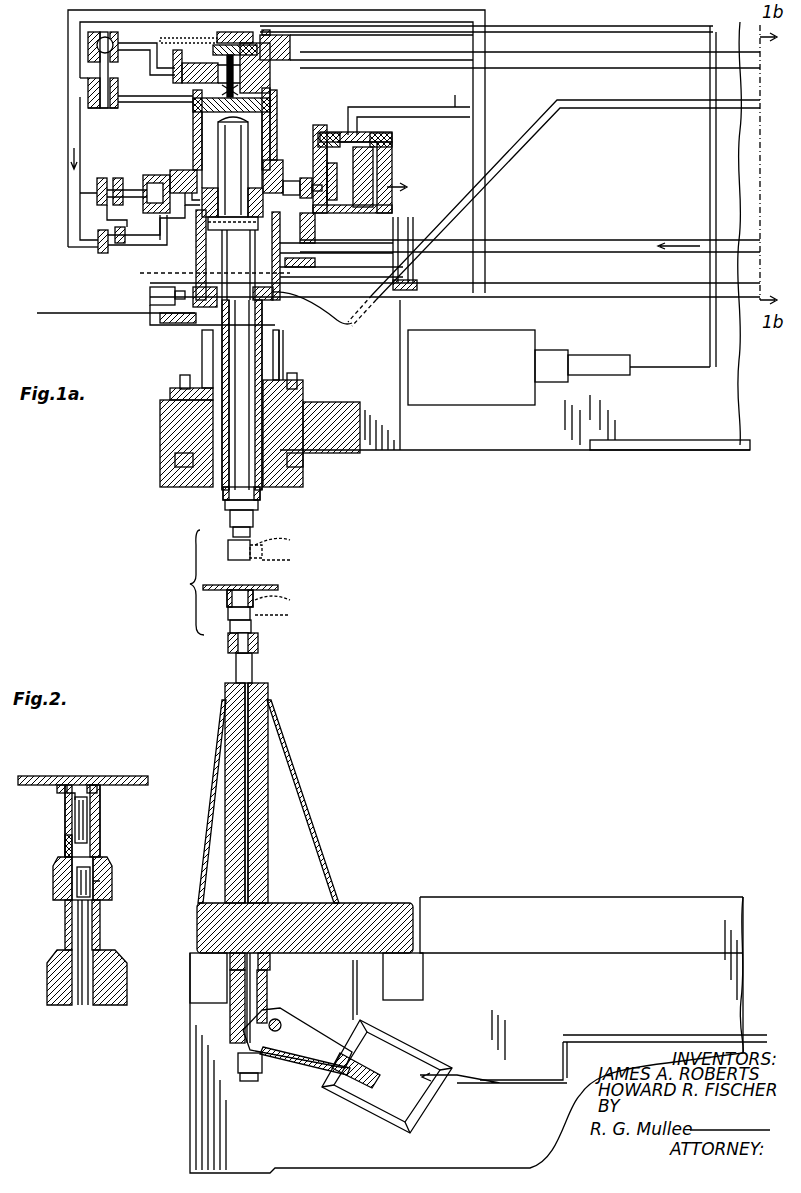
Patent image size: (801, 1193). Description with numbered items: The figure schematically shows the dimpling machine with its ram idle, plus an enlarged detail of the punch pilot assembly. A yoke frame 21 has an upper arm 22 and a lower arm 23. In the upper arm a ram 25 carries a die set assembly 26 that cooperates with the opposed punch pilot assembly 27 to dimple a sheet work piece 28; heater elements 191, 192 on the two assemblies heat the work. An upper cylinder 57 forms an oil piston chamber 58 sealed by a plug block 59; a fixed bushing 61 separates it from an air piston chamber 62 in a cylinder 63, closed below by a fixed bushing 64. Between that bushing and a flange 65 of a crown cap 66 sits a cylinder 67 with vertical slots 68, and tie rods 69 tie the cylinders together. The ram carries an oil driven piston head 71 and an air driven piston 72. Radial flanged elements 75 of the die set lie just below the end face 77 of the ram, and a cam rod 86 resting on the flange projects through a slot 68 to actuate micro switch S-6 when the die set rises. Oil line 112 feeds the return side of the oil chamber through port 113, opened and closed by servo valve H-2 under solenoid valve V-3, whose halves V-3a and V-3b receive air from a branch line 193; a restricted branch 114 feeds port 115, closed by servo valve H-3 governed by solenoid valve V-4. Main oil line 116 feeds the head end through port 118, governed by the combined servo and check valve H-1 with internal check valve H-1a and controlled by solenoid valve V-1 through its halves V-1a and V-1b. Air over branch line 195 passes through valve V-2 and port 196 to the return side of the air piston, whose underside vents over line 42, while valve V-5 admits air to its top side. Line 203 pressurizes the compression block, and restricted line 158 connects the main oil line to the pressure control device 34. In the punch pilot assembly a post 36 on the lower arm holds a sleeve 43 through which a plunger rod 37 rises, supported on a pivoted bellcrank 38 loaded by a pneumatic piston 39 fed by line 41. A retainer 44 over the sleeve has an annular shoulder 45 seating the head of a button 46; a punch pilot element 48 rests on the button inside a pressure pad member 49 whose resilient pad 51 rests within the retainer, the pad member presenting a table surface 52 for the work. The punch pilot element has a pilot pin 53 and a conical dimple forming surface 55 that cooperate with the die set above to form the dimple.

In FIG. 1A, the upper half of valve V-1 V-1a is at (96, 42).
In FIG. 1A, the solenoid valve V-1 is at (81, 96).
In FIG. 1A, the valve half of V-1 V-1b is at (100, 108).
In FIG. 1A, the solenoid valve V-4 is at (96, 195).
In FIG. 1A, the solenoid valve V-5 is at (98, 250).
In FIG. 1A, the restricted branch 114 is at (160, 243).
In FIG. 1A, the combined servo slide valve and check valve H-1 is at (232, 32).
In FIG. 1A, the check valve H-1a is at (205, 106).
In FIG. 1A, the oil piston chamber 58 is at (200, 148).
In FIG. 1A, the slide servo valve H-3 is at (176, 170).
In FIG. 1A, the port 115 is at (210, 180).
In FIG. 1A, the fixed bushing 61 is at (250, 194).
In FIG. 1A, the air piston chamber 62 is at (208, 258).
In FIG. 1A, the air driven piston 72 is at (262, 258).
In FIG. 1A, the cylinder 63 is at (196, 262).
In FIG. 1A, the fixed bushing 64 is at (218, 296).
In FIG. 1A, the micro switch S-6 is at (150, 300).
In FIG. 1A, the port 196 is at (323, 317).
In FIG. 1A, the vertical slots 68 is at (204, 346).
In FIG. 1A, the cylinder 67 is at (284, 360).
In FIG. 1A, the cam rod 86 is at (218, 372).
In FIG. 1A, the ram 25 is at (242, 395).
In FIG. 1A, the crown cap 66 is at (200, 480).
In FIG. 1A, the flange 65 is at (308, 394).
In FIG. 1A, the tie rods 69 is at (300, 466).
In FIG. 1A, the end face of the ram 77 is at (262, 492).
In FIG. 1A, the radial flanged elements 75 is at (225, 505).
In FIG. 1A, the die set assembly 26 is at (269, 533).
In FIG. 1A, the electric heater element 191 is at (276, 549).
In FIG. 1A, the work piece 28 is at (278, 585).
In FIG. 2, the work piece 28 is at (145, 778).
In FIG. 1A, the electric heater element 192 is at (276, 605).
In FIG. 1A, the retainer 44 is at (262, 644).
In FIG. 2, the retainer 44 is at (55, 868).
In FIG. 1A, the sleeve 43 is at (262, 672).
In FIG. 2, the sleeve 43 is at (100, 930).
In FIG. 1A, the pressure pad member 49 is at (230, 627).
In FIG. 2, the pressure pad member 49 is at (100, 802).
In FIG. 1A, the punch pilot assembly 27 is at (295, 712).
In FIG. 2, the punch pilot assembly 27 is at (104, 758).
In FIG. 1A, the post 36 is at (268, 780).
In FIG. 2, the post 36 is at (127, 982).
In FIG. 1A, the plunger rod 37 is at (250, 862).
In FIG. 2, the plunger rod 37 is at (60, 985).
In FIG. 1A, the plug block 59 is at (292, 50).
In FIG. 1A, the port 118 is at (280, 90).
In FIG. 1A, the oil driven piston head 71 is at (278, 108).
In FIG. 1A, the upper cylinder 57 is at (272, 148).
In FIG. 1A, the port 113 is at (277, 165).
In FIG. 1A, the left half of valve V-3 V-3b is at (338, 130).
In FIG. 1A, the solenoid valve V-3 is at (384, 113).
In FIG. 1A, the branch line 193 is at (456, 89).
In FIG. 1A, the right half of valve V-3 V-3a is at (392, 138).
In FIG. 1A, the servo slide valve H-2 is at (308, 205).
In FIG. 1A, the line 42 is at (403, 217).
In FIG. 1A, the valve V-2 is at (418, 286).
In FIG. 1A, the main outlet oil line 116 is at (662, 60).
In FIG. 1A, the oil line 203 is at (694, 108).
In FIG. 1A, the outlet oil line 112 is at (636, 238).
In FIG. 1A, the branch line 195 is at (625, 276).
In FIG. 1A, the restricted lateral oil line 158 is at (665, 340).
In FIG. 1A, the pressure control device 34 is at (488, 367).
In FIG. 1A, the upper arm 22 is at (505, 450).
In FIG. 1A, the yoke frame 21 is at (676, 459).
In FIG. 1A, the lower arm 23 is at (520, 898).
In FIG. 1A, the bellcrank 38 is at (295, 1033).
In FIG. 1A, the piston 39 is at (423, 1105).
In FIG. 1A, the line 41 is at (667, 1036).
In FIG. 2, the table surface 52 is at (65, 785).
In FIG. 2, the conical dimple forming surface 55 is at (98, 783).
In FIG. 2, the pilot pin 53 is at (70, 793).
In FIG. 2, the punch pilot element 48 is at (87, 822).
In FIG. 2, the annular resilient pad 51 is at (65, 838).
In FIG. 2, the button 46 is at (110, 860).
In FIG. 2, the inner annular shoulder 45 is at (100, 881).